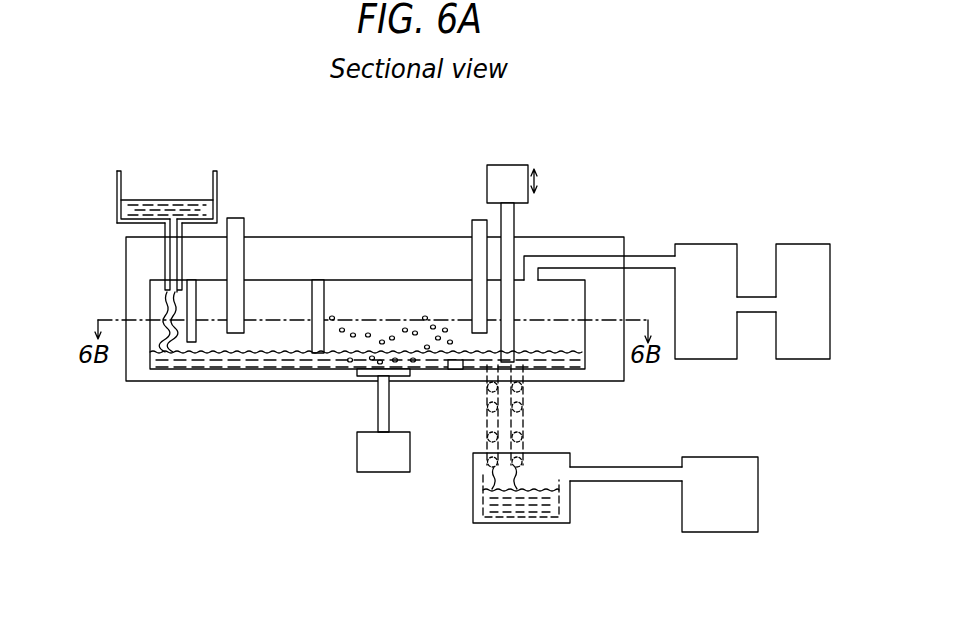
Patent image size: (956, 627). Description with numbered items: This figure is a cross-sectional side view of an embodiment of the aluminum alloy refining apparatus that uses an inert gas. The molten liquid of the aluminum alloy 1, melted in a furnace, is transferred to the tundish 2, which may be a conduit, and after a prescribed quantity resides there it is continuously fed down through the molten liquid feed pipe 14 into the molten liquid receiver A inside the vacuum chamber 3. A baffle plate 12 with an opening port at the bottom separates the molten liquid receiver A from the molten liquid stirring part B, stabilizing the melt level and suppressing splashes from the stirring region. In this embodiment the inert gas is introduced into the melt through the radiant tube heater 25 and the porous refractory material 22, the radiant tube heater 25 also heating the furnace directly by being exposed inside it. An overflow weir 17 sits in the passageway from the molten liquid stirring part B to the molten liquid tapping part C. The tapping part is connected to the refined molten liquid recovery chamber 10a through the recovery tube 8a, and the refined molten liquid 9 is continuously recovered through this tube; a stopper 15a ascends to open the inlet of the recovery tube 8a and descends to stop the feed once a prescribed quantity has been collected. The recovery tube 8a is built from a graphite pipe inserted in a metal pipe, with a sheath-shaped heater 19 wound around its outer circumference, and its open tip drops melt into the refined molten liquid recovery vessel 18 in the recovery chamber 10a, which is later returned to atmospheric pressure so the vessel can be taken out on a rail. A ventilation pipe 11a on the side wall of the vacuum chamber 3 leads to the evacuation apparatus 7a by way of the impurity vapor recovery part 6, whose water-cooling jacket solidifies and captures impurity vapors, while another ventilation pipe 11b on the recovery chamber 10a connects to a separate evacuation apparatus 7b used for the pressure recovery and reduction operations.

The molten liquid of the aluminum alloy 1 is at (122, 208).
The tundish 2 is at (218, 187).
The vacuum chamber 3 is at (255, 375).
The impurity vapor recovery part 6 is at (710, 244).
The evacuation apparatus 7a is at (805, 244).
The evacuation apparatus 7b is at (717, 457).
The recovery tube 8a is at (523, 407).
The refined molten liquid 9 is at (590, 357).
The refined molten liquid recovery chamber 10a is at (515, 525).
The ventilation pipe 11a is at (640, 256).
The ventilation pipe 11b is at (603, 467).
The baffle plate 12 is at (320, 355).
The molten liquid feed pipe 14 is at (168, 247).
The stopper 15a is at (508, 228).
The overflow weir 17 is at (470, 366).
The refined molten liquid recovery vessel 18 is at (559, 505).
The sheath-shaped heater 19 is at (523, 440).
The porous refractory material 22 is at (395, 372).
The radiant tube heater 25 is at (242, 225).
The molten liquid receiver A is at (157, 340).
The molten liquid stirring part B is at (357, 300).
The molten liquid tapping part C is at (540, 343).